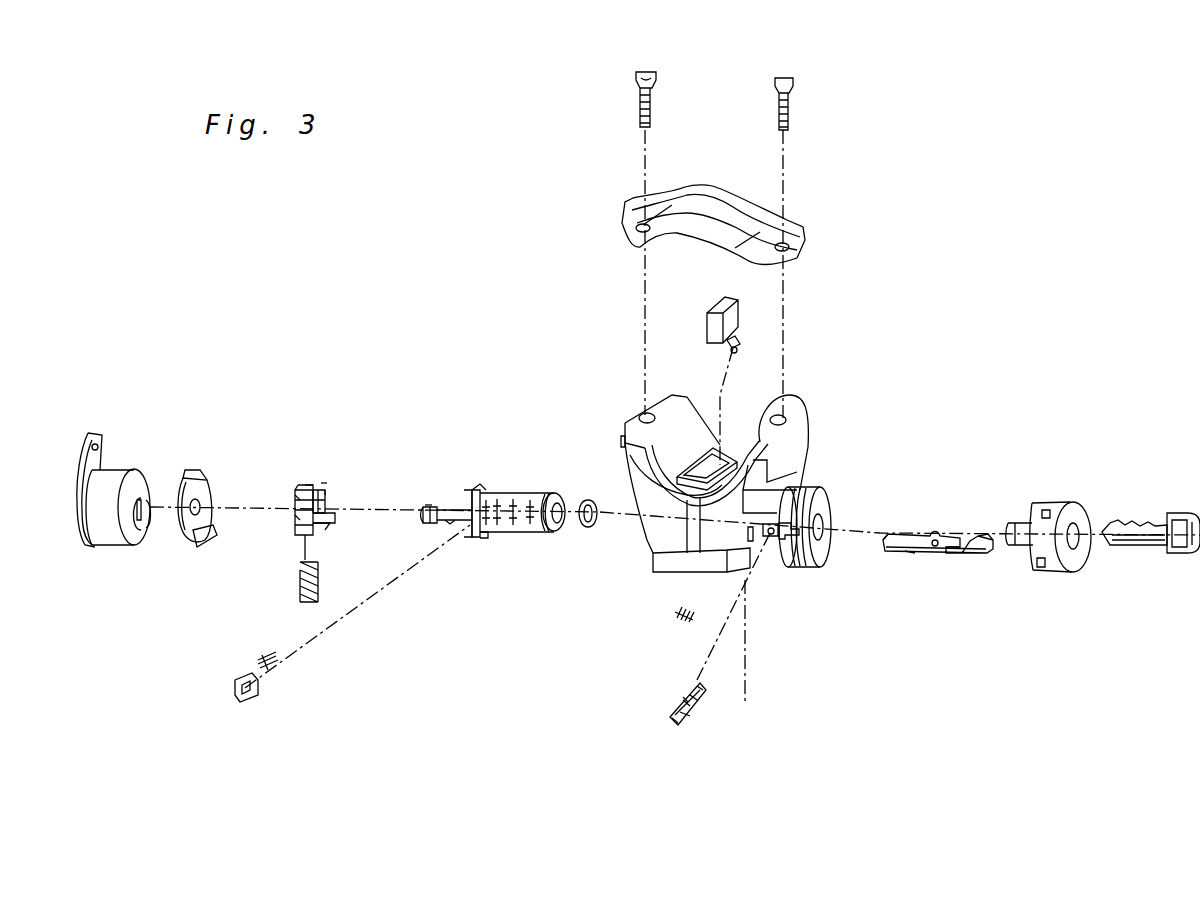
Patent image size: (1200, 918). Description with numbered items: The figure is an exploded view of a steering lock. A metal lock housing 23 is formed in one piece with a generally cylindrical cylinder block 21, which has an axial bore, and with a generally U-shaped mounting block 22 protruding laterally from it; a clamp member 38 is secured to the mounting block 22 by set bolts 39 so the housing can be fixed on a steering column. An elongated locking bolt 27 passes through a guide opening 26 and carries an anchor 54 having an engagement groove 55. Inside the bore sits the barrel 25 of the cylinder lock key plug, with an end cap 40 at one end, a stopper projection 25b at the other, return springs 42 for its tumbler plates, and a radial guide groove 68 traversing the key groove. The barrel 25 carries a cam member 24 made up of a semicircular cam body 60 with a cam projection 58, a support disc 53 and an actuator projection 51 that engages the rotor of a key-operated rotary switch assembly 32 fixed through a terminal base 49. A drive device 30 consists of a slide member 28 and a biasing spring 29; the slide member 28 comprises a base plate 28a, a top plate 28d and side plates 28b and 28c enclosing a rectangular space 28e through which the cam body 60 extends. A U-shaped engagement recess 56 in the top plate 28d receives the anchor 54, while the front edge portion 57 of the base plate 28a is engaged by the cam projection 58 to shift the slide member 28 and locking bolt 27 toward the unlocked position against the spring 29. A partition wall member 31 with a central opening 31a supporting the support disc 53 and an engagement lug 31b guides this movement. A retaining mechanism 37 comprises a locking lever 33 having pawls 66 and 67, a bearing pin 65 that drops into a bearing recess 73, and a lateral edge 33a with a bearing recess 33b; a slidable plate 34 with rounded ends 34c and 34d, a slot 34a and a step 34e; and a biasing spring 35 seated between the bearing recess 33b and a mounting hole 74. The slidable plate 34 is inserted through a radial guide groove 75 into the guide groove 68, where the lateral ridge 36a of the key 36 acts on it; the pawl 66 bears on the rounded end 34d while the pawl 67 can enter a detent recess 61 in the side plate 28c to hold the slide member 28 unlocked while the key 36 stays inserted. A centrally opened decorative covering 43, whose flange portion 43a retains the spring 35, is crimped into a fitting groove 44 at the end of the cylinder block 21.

The cylinder block 21 is at (687, 523).
The mounting block 22 is at (805, 423).
The lock housing 23 is at (622, 414).
The cam member 24 is at (462, 488).
The barrel 25 is at (513, 497).
The stopper projection 25b is at (483, 538).
The guide opening 26 is at (707, 468).
The locking bolt 27 is at (710, 323).
The slide member 28 is at (296, 485).
The base plate 28a is at (325, 515).
The side plate 28b is at (323, 483).
The side plate 28c is at (297, 515).
The top plate 28d is at (308, 480).
The rectangular space 28e is at (325, 488).
The biasing spring 29 is at (298, 582).
The drive device 30 is at (292, 537).
The partition wall member 31 is at (178, 527).
The central opening 31a is at (197, 499).
The engagement lug 31b is at (200, 548).
The rotary switch assembly 32 is at (115, 470).
The locking lever 33 is at (886, 556).
The lateral edge 33a is at (910, 556).
The bearing recess 33b is at (950, 554).
The slidable plate 34 is at (703, 697).
The slot 34a is at (687, 720).
The rounded end 34c is at (693, 683).
The rounded end 34d is at (673, 712).
The step 34e is at (678, 693).
The biasing spring 35 is at (688, 608).
The key 36 is at (1175, 513).
The lateral ridge 36a is at (1130, 522).
The retaining mechanism 37 is at (702, 608).
The clamp member 38 is at (695, 232).
The set bolts 39 is at (651, 103).
The end cap 40 is at (588, 498).
The return springs 42 is at (266, 655).
The decorative covering 43 is at (1052, 503).
The flange portion 43a is at (1013, 523).
The fitting groove 44 is at (815, 518).
The terminal base 49 is at (88, 433).
The actuator projection 51 is at (428, 505).
The support disc 53 is at (428, 517).
The anchor 54 is at (738, 350).
The engagement groove 55 is at (740, 340).
The engagement recess 56 is at (312, 486).
The front edge portion 57 is at (318, 518).
The cam projection 58 is at (480, 486).
The cam body 60 is at (447, 524).
The detent recess 61 is at (295, 497).
The bearing pin 65 is at (938, 538).
The pawl 66 is at (992, 540).
The pawl 67 is at (890, 533).
The guide groove 68 is at (527, 524).
The bearing recess 73 is at (752, 538).
The mounting hole 74 is at (771, 537).
The radial guide groove 75 is at (820, 562).